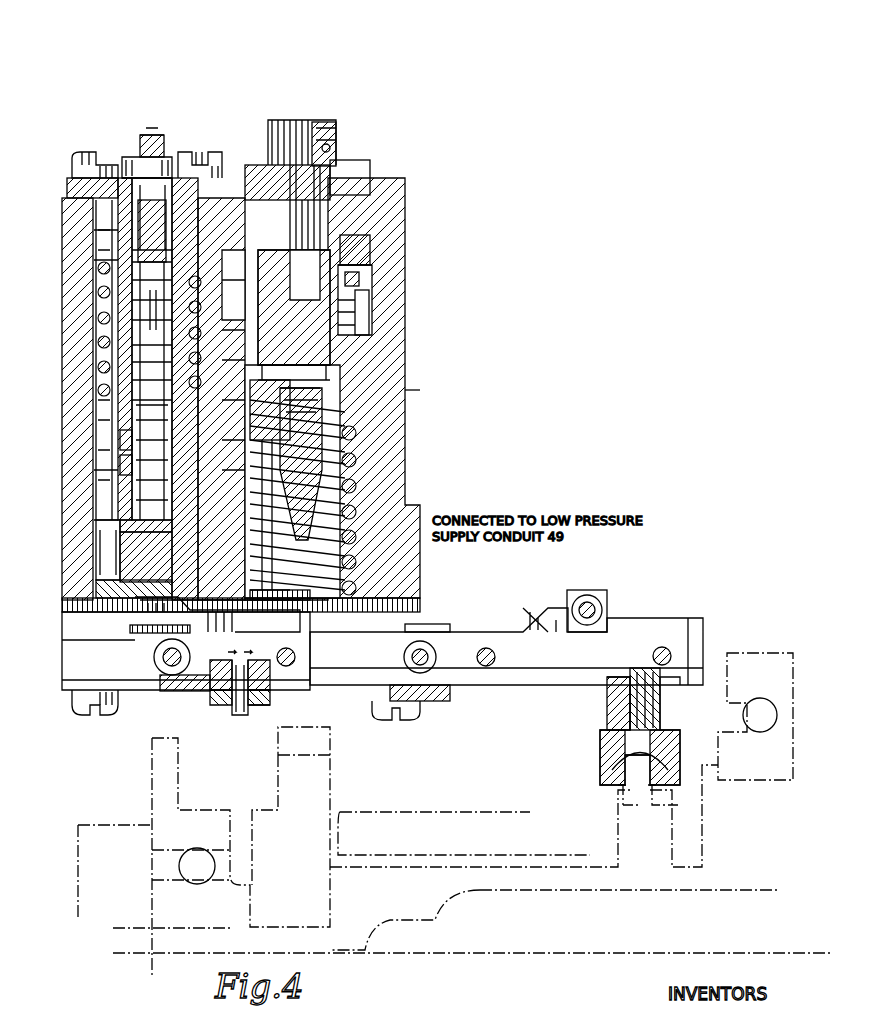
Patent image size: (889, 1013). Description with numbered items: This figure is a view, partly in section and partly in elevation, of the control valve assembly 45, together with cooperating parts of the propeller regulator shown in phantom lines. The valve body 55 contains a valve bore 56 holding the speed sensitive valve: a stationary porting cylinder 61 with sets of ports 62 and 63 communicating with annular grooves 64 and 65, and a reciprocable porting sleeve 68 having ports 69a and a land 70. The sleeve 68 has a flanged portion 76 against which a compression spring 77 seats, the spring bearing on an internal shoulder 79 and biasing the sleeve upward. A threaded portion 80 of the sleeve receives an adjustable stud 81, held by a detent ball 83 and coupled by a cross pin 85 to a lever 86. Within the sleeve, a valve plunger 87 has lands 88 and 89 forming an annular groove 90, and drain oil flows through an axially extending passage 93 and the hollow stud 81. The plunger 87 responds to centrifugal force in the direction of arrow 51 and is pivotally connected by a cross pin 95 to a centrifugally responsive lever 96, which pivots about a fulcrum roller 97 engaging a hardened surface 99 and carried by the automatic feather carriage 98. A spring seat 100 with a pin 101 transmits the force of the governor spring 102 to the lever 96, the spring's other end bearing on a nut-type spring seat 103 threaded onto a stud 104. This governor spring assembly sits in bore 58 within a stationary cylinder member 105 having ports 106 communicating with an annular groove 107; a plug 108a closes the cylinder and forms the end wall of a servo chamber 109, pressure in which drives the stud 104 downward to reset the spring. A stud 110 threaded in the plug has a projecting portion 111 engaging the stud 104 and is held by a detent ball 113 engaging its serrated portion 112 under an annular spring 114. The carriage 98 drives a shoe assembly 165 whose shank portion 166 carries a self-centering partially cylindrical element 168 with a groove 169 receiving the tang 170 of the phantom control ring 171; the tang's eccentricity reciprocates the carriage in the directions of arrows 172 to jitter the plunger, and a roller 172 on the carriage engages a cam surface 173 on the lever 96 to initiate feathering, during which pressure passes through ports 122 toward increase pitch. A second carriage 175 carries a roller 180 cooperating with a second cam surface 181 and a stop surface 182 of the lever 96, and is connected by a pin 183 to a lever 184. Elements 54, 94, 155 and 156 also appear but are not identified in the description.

The control valve assembly 45 is at (524, 313).
The arrow 51 is at (148, 48).
The spring 54 is at (217, 374).
The valve body 55 is at (448, 402).
The valve bore 56 is at (200, 185).
The bore 58 is at (350, 185).
The stationary porting cylinder 61 is at (105, 449).
The ports 62 is at (105, 471).
The ports 63 is at (110, 560).
The annular groove 64 is at (100, 491).
The annular groove 65 is at (115, 573).
The reciprocable porting sleeve 68 is at (108, 312).
The ports 69a is at (100, 533).
The land 70 is at (130, 593).
The flanged portion 76 is at (100, 232).
The compression spring 77 is at (97, 273).
The internal shoulder 79 is at (100, 406).
The threaded portion 80 is at (103, 361).
The adjustable stud 81 is at (103, 289).
The detent ball 83 is at (203, 220).
The cross pin 85 is at (158, 162).
The lever 86 is at (150, 136).
The valve plunger 87 is at (140, 592).
The land 88 is at (105, 513).
The land 89 is at (102, 386).
The annular groove 90 is at (105, 426).
The axially extending passage 93 is at (125, 616).
The seal rings 94 is at (104, 335).
The cross pin 95 is at (162, 620).
The centrifugally responsive lever 96 is at (204, 690).
The fulcrum roller 97 is at (404, 657).
The automatic feather carriage 98 is at (442, 702).
The hardened surface 99 is at (424, 626).
The spring seat 100 is at (325, 585).
The pin 101 is at (292, 604).
The compression spring 102 is at (352, 478).
The spring seat 103 is at (350, 422).
The stud 104 is at (345, 446).
The stationary cylinder member 105 is at (362, 258).
The ports 106 is at (350, 333).
The annular groove 107 is at (360, 306).
The plug 108a is at (362, 202).
The servo chamber 109 is at (356, 281).
The stud 110 is at (316, 118).
The projecting portion 111 is at (355, 268).
The serrated portion 112 is at (322, 132).
The detent ball 113 is at (328, 146).
The annular spring 114 is at (278, 122).
The ports 122 is at (500, 712).
The machine frame 155 is at (266, 805).
The valve body 156 is at (280, 310).
The shoe assembly 165 is at (608, 728).
The shank portion 166 is at (660, 728).
The partially cylindrical element 168 is at (664, 748).
The groove 169 is at (628, 762).
The tang 170 is at (640, 775).
The control ring 171 is at (648, 848).
The roller 172 is at (595, 598).
The cam surface 173 is at (605, 615).
The second carriage 175 is at (184, 690).
The roller 180 is at (172, 688).
The second cam surface 181 is at (195, 640).
The surface 182 is at (160, 628).
The pin 183 is at (240, 716).
The lever 184 is at (270, 704).